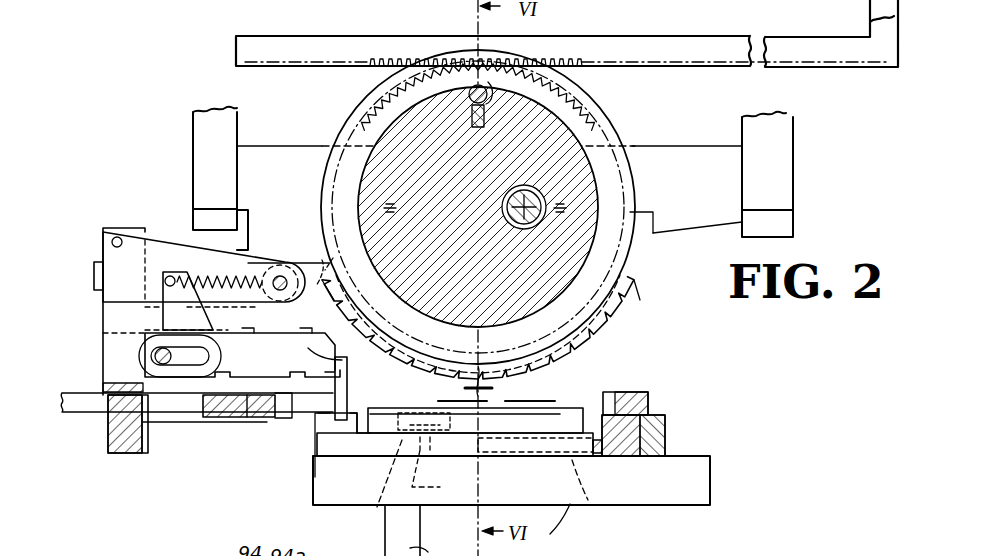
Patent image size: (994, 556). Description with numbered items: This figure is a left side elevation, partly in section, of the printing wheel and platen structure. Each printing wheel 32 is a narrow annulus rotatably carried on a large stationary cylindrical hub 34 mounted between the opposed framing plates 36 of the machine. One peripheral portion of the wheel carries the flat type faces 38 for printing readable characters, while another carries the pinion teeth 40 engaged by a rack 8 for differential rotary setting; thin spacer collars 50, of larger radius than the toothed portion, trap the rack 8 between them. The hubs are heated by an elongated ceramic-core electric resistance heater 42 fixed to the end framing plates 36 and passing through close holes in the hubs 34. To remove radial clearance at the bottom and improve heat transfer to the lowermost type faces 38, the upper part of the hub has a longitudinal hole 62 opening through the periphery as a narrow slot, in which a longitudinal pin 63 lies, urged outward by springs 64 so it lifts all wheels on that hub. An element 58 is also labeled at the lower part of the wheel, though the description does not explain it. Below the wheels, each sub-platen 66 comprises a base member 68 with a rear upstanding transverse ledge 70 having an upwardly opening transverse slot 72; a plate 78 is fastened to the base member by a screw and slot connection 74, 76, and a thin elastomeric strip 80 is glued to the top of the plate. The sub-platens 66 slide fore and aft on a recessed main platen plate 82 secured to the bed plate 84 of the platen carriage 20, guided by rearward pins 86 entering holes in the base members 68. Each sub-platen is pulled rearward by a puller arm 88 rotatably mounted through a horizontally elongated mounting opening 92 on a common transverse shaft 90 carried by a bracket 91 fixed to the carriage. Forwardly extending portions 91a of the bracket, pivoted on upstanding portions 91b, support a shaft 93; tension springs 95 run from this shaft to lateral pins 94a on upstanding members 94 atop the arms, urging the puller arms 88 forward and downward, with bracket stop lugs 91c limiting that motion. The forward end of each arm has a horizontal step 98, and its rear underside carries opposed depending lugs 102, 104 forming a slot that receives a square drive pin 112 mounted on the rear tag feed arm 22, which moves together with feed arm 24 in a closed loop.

The rack 8 is at (244, 52).
The platen carriage 20 is at (712, 483).
The rear tag feed arm 22 is at (226, 414).
The feed arm 24 is at (652, 400).
The printing wheel 32 is at (608, 279).
The stationary cylindrical hub 34 is at (554, 144).
The framing plate 36 is at (289, 211).
The type face 38 is at (596, 348).
The pinion teeth 40 is at (354, 134).
The electric resistance heater 42 is at (542, 205).
The thin spacer collar 50 is at (376, 96).
The stop 58 is at (516, 394).
The longitudinal hole 62 is at (494, 98).
The longitudinal pin 63 is at (470, 88).
The spring 64 is at (484, 120).
The sub-platen 66 is at (378, 437).
The base member 68 is at (472, 514).
The transverse ledge 70 is at (316, 442).
The transverse slot 72 is at (315, 460).
The screw 74 is at (436, 468).
The slot 76 is at (377, 500).
The plate 78 is at (464, 430).
The elastomeric strip 80 is at (405, 392).
The main platen plate 82 is at (668, 428).
The bed plate 84 is at (570, 520).
The pin 86 is at (588, 508).
The puller arm 88 is at (341, 362).
The transverse shaft 90 is at (150, 366).
The bracket 91 is at (100, 330).
The forwardly extending bracket portion 91a is at (252, 268).
The upstanding bracket portion 91b is at (102, 316).
The bracket stop lug 91c is at (94, 272).
The mounting opening 92 is at (208, 358).
The shaft 93 is at (315, 288).
The upstanding member 94 is at (162, 268).
The lateral pin 94a is at (168, 276).
The tension spring 95 is at (248, 296).
The step 98 is at (318, 422).
The depending lug 102 is at (216, 420).
The depending lug 104 is at (319, 388).
The square drive pin 112 is at (250, 417).